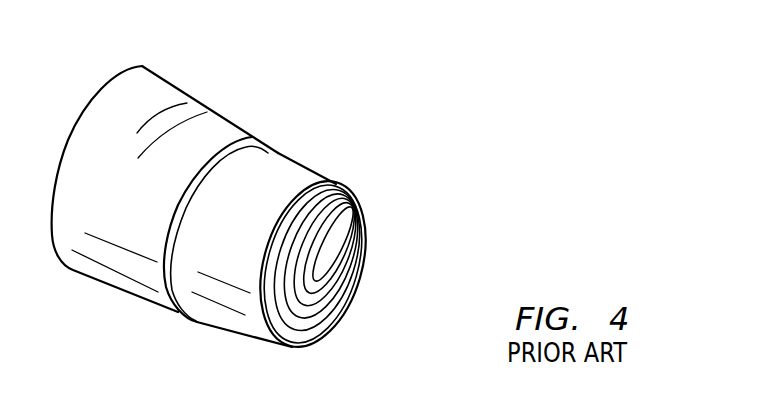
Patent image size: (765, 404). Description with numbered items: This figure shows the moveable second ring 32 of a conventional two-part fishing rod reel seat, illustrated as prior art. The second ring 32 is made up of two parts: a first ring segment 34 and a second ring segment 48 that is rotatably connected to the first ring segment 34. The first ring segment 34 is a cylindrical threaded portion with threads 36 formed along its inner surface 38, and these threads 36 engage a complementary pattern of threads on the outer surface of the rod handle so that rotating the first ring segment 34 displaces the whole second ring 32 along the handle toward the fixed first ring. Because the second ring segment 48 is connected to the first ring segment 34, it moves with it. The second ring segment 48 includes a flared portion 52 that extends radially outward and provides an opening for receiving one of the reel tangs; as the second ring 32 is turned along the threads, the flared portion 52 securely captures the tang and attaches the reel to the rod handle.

The second moveable ring 32 is at (245, 207).
The first ring segment 34 is at (247, 238).
The threads 36 is at (348, 260).
The inner surface 38 is at (327, 258).
The second ring segment 48 is at (114, 184).
The flared portion 52 is at (173, 82).